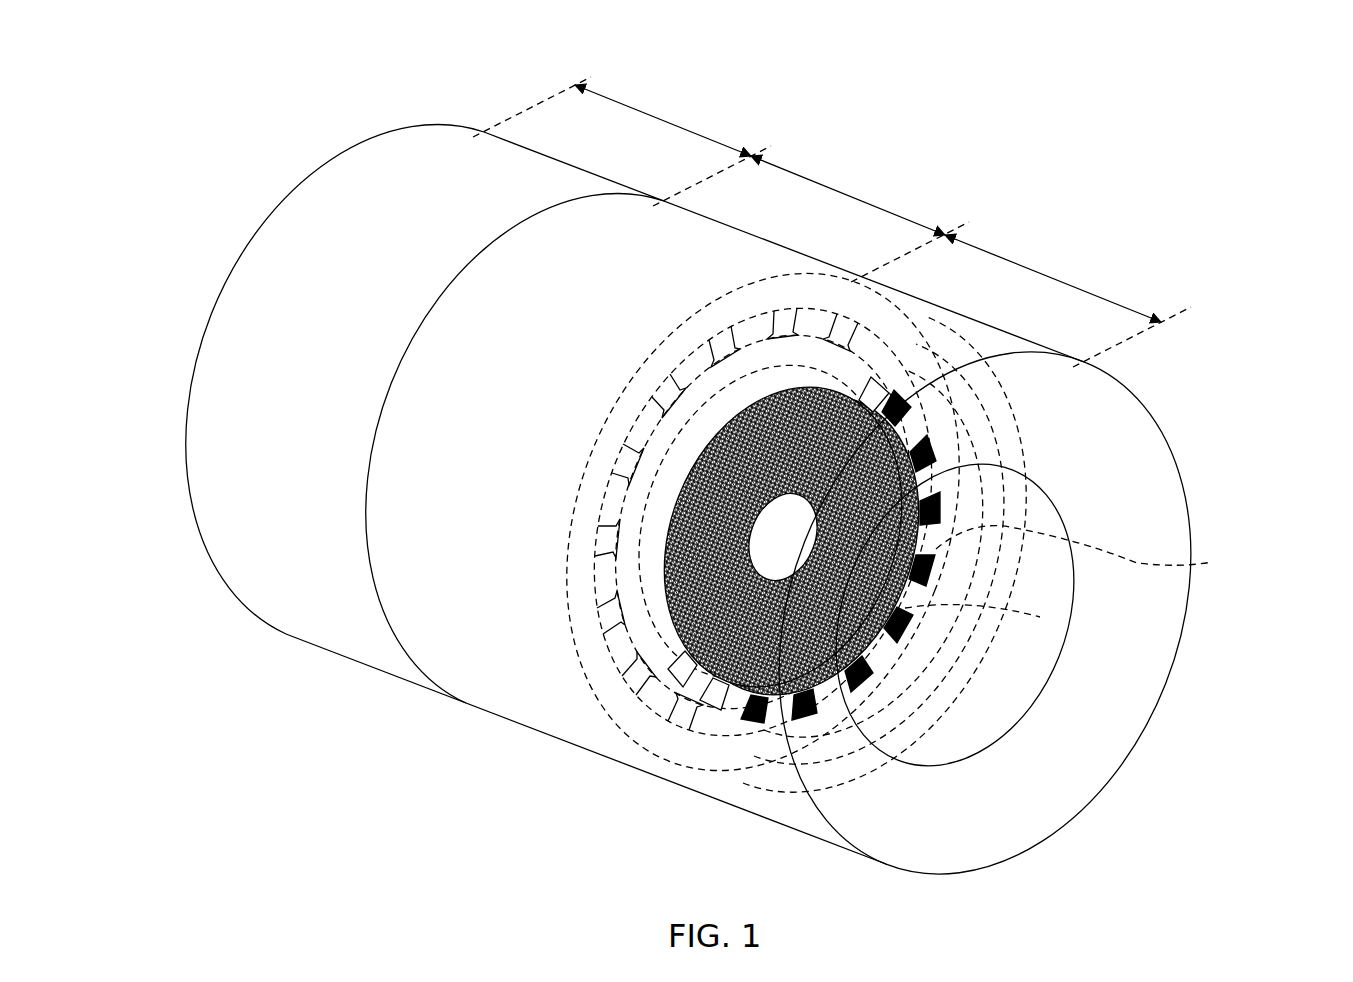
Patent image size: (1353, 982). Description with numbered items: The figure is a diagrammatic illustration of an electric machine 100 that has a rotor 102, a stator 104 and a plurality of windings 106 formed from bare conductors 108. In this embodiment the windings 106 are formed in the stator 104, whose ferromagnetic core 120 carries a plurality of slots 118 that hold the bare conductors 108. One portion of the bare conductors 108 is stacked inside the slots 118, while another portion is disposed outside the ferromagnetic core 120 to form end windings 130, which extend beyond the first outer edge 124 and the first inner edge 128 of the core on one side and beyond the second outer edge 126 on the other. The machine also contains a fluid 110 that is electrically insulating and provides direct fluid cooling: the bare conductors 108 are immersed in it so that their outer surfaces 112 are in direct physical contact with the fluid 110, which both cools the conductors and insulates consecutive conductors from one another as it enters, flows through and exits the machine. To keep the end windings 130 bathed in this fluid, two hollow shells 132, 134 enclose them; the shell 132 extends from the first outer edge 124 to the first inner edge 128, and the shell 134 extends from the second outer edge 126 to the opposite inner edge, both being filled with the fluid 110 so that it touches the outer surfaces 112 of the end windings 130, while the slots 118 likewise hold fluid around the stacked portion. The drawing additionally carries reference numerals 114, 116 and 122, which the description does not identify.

The electric machine 100 is at (398, 80).
The rotor 102 is at (876, 590).
The stator 104 is at (802, 332).
The windings 106 is at (1212, 562).
The bare conductors 108 is at (895, 327).
The fluid 110 is at (1167, 548).
The outer surfaces 112 is at (637, 594).
The tooth tip 114 is at (688, 750).
The slot 116 is at (735, 750).
The slots 118 is at (937, 510).
The ferromagnetic core 120 is at (498, 704).
The stator axial length 122 is at (866, 202).
The first outer edge 124 is at (595, 447).
The second outer edge 126 is at (442, 293).
The first inner edge 128 is at (665, 515).
The end windings 130 is at (790, 742).
The shell 132 is at (1054, 279).
The shell 134 is at (685, 127).